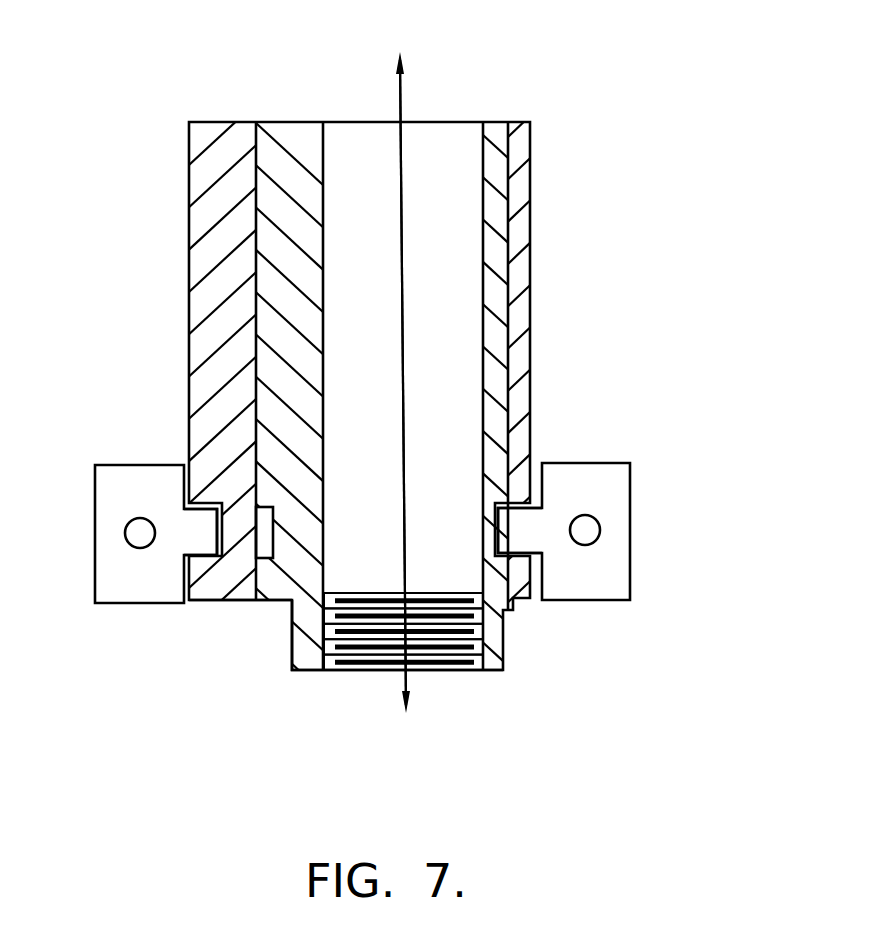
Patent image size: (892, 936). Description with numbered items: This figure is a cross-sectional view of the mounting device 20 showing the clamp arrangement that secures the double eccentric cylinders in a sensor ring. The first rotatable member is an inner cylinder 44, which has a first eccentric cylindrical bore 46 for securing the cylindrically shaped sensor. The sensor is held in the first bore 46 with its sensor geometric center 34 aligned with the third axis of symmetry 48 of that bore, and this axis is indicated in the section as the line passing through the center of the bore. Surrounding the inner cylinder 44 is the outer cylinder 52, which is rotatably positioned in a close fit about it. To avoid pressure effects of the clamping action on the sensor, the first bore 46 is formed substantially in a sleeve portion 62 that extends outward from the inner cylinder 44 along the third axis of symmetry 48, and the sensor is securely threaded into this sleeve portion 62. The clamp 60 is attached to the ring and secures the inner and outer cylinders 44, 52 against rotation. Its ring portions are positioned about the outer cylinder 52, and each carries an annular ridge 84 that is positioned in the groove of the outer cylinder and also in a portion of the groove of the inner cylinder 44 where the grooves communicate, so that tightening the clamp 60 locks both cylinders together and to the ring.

The mounting device 20 is at (547, 62).
The sensor geometric center 34 is at (393, 372).
The third axis of symmetry 48 is at (403, 382).
The first eccentric cylindrical bore 46 is at (445, 167).
The inner cylinder 44 is at (272, 598).
The outer cylinder 52 is at (264, 558).
The clamp 60 is at (95, 528).
The sleeve portion 62 is at (289, 655).
The annular ridge 84 is at (210, 533).